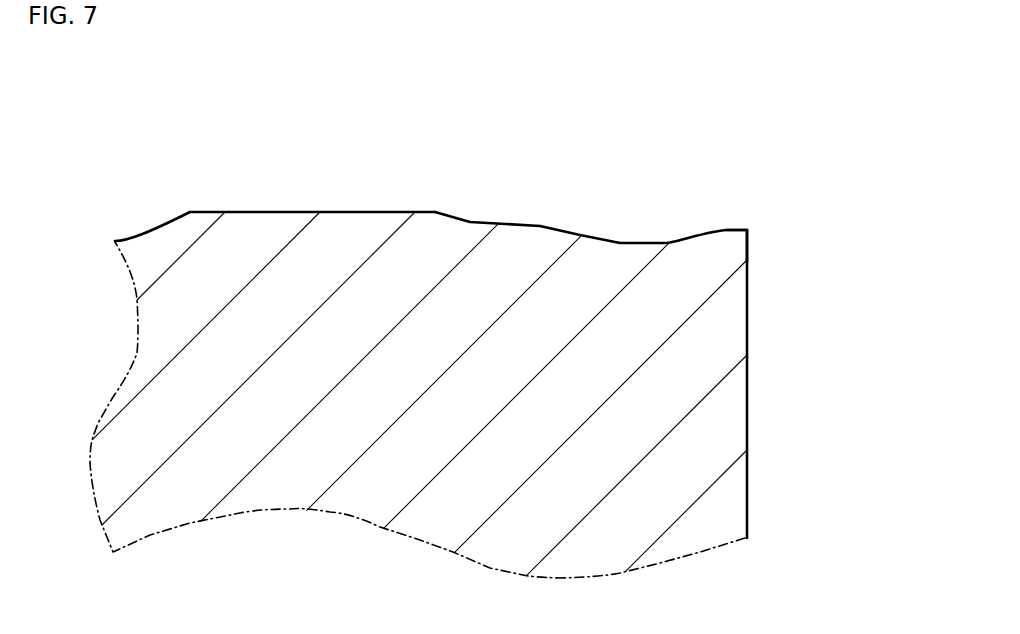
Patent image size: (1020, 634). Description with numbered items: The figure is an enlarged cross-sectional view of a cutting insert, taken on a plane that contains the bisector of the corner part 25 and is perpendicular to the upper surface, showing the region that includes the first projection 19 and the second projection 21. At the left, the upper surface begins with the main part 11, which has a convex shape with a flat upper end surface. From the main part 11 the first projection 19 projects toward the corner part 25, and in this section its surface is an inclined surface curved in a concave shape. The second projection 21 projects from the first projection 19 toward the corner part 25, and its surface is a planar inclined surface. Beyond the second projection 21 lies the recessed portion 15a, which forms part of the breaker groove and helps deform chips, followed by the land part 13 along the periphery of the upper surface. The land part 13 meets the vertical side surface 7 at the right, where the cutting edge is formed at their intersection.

The side surface 7 is at (747, 413).
The main part 11 is at (298, 212).
The land part 13 is at (742, 230).
The recessed portion 15a is at (648, 243).
The first projection 19 is at (473, 221).
The second projection 21 is at (565, 231).
The corner part 25 is at (748, 229).